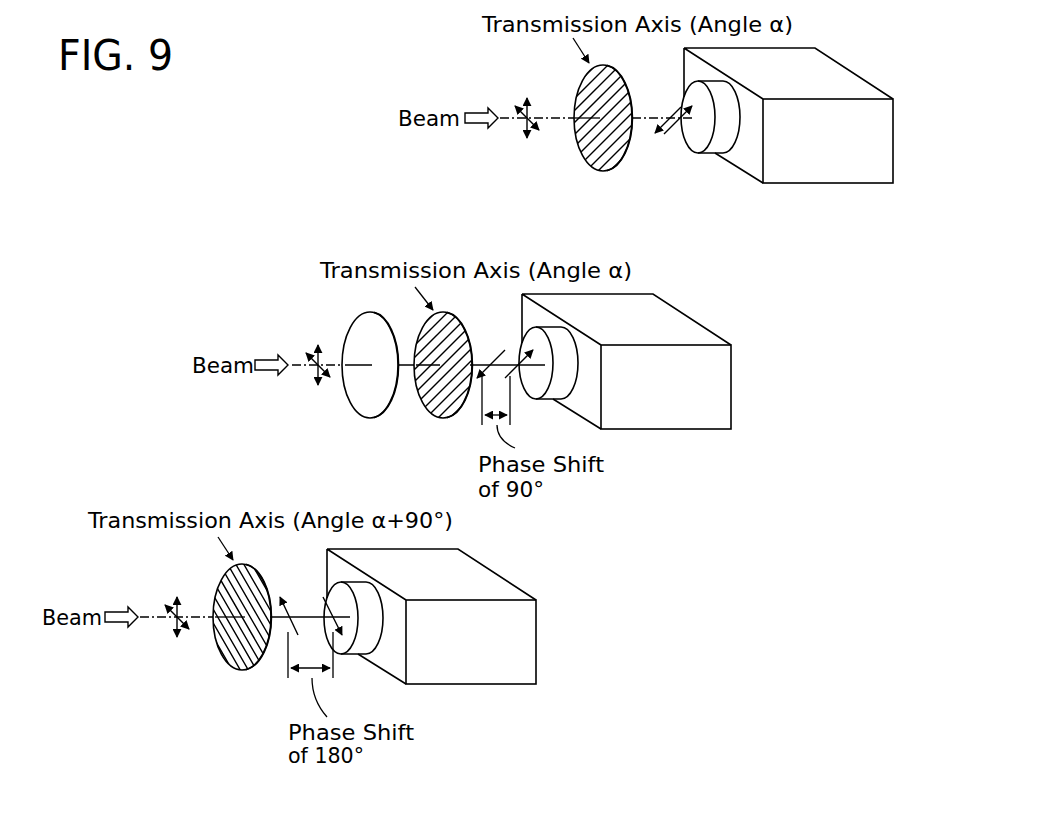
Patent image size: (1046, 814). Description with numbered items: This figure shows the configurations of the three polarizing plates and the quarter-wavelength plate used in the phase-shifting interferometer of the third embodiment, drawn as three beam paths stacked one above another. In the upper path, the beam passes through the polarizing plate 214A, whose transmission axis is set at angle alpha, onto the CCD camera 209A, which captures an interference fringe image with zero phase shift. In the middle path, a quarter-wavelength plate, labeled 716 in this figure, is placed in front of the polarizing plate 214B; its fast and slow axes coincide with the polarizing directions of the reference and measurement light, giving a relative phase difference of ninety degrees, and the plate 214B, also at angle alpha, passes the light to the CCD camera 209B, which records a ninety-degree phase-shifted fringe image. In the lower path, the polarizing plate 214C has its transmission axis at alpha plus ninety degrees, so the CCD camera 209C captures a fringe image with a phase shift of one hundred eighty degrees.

The polarizing plate 214A is at (603, 171).
The CCD camera 209A is at (825, 183).
The quarter-wave plate 716 is at (370, 418).
The polarizing plate 214B is at (443, 418).
The CCD camera 209B is at (663, 427).
The polarizing plate 214C is at (242, 671).
The CCD camera 209C is at (460, 683).